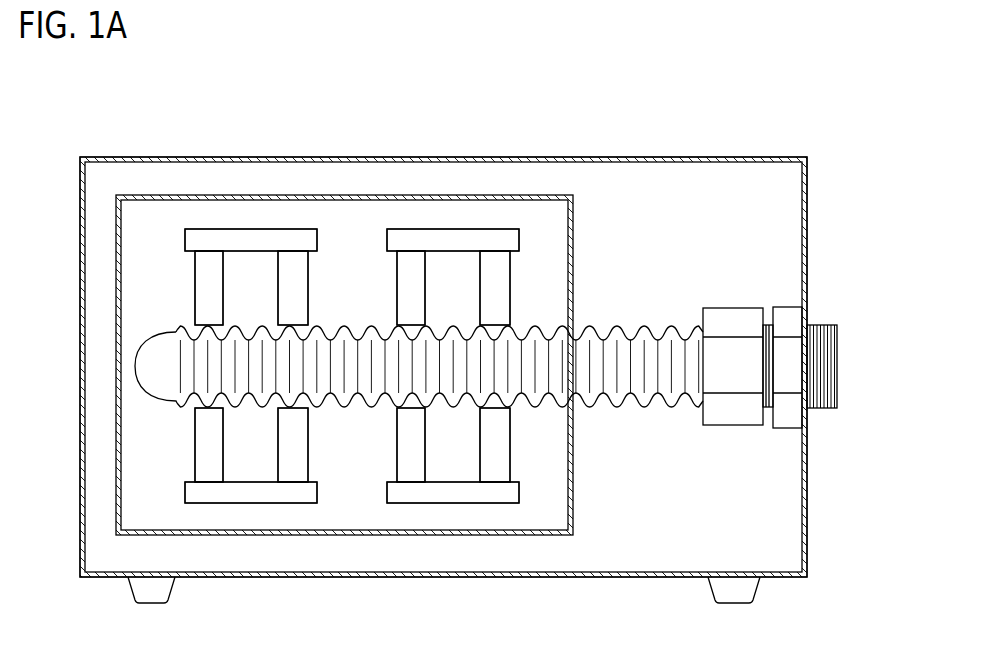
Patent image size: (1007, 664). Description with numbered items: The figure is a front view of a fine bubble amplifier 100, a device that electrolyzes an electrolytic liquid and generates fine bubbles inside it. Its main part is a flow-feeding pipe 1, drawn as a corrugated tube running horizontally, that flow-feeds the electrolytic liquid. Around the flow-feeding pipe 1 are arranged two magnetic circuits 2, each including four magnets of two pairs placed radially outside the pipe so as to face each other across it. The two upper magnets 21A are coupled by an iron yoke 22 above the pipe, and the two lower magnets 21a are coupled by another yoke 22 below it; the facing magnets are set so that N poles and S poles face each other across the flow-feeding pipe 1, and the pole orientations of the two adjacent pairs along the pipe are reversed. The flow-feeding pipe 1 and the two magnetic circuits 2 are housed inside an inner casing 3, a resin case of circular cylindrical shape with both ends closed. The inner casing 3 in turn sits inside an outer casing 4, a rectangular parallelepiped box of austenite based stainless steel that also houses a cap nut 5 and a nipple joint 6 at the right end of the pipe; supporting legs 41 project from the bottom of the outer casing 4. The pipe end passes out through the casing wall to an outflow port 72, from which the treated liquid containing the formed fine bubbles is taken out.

The fine bubble amplifier 100 is at (838, 143).
The outer casing 4 is at (145, 157).
The inner casing 3 is at (205, 195).
The supporting legs 41 is at (176, 592).
The magnetic circuit 2 is at (257, 225).
The yoke 22 is at (400, 229).
The upper magnet 21A is at (298, 265).
The lower magnet 21a is at (298, 445).
The flow-feeding pipe 1 is at (624, 320).
The cap nut 5 is at (733, 307).
The nipple joint 6 is at (790, 307).
The outflow port 72 is at (846, 392).